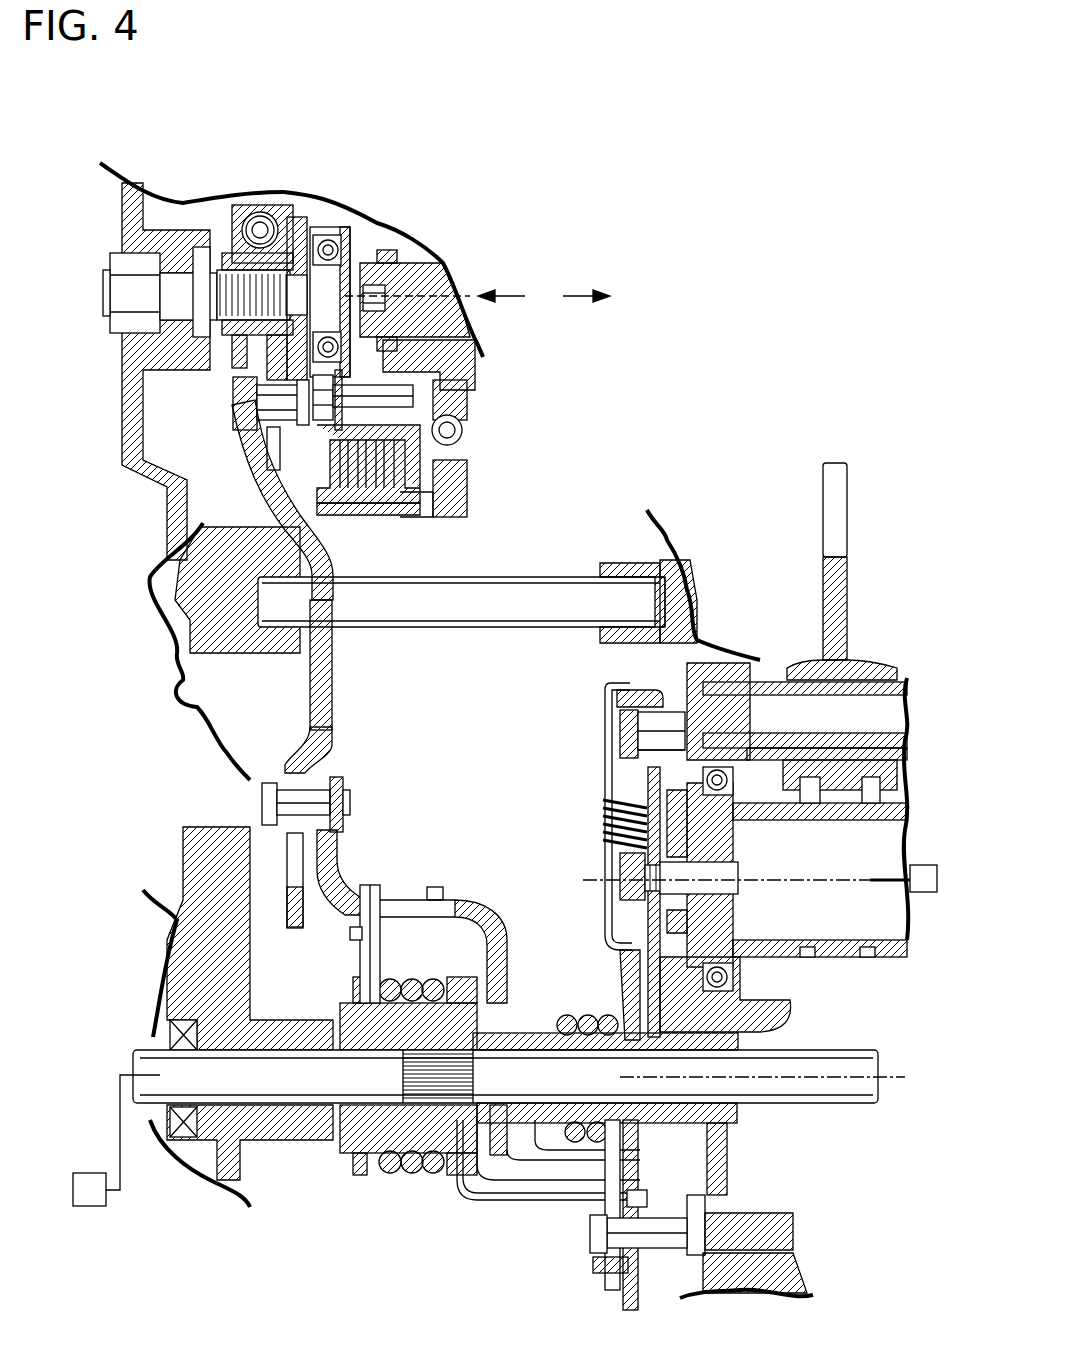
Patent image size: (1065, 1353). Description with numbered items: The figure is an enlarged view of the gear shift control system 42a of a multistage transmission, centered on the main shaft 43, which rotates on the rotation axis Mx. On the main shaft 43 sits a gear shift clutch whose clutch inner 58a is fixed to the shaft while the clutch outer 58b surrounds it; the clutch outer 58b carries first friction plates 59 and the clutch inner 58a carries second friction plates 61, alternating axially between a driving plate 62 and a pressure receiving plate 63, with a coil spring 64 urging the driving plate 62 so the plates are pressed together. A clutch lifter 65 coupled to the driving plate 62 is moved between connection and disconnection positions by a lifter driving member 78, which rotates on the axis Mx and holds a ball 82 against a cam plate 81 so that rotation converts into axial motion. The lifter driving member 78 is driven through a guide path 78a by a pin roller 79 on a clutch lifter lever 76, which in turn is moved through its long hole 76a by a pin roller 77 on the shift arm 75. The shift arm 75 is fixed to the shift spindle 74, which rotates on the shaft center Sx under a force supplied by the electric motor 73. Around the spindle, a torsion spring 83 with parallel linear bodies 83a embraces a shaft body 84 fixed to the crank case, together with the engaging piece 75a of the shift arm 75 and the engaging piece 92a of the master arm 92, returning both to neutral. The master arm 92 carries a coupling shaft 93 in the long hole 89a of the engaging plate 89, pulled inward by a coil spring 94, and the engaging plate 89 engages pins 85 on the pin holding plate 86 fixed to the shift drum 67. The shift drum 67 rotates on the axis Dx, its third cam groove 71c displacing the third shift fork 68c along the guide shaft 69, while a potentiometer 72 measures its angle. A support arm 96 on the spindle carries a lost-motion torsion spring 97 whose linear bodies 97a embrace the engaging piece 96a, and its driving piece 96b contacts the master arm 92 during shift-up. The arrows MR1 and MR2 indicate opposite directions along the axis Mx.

The cam plate 81 is at (235, 225).
The ball 82 is at (258, 220).
The lifter driving member 78 is at (278, 205).
The clutch lifter 65 is at (300, 220).
The clutch inner 58a is at (387, 250).
The main shaft 43 is at (415, 262).
The rotation axis of the main shaft Mx is at (437, 290).
The direction MR2 is at (504, 284).
The direction MR1 is at (589, 284).
The coil spring 64 is at (445, 360).
The second friction plates 61 is at (460, 405).
The driving plate 62 is at (467, 473).
The pin roller 79 is at (250, 440).
The guide path 78a is at (272, 445).
The pressure receiving plate 63 is at (322, 440).
The clutch outer 58b is at (385, 512).
The first friction plates 59 is at (410, 505).
The gear shift control system 42a is at (688, 496).
The clutch lifter lever 76 is at (333, 705).
The pin roller 77 is at (280, 785).
The long hole 76a is at (290, 890).
The support arm 96 is at (340, 1150).
The torsion spring 97 is at (388, 1173).
The linear body 97a is at (434, 887).
The engaging piece 96a is at (350, 935).
The shift arm 75 is at (503, 940).
The driving piece 96b is at (496, 1205).
The shift spindle 74 is at (795, 1100).
The shaft center of the shift spindle Sx is at (845, 1090).
The electric motor 73 is at (90, 1173).
The coil spring 94 is at (607, 730).
The coupling shaft 93 is at (637, 690).
The engaging plate 89 is at (651, 710).
The long hole 89a is at (690, 716).
The pins 85 is at (640, 790).
The master arm 92 is at (625, 962).
The pin holding plate 86 is at (630, 903).
The shift drum 67 is at (795, 953).
The third cam groove 71c is at (840, 815).
The guide shaft 69 is at (778, 683).
The third shift fork 68c is at (820, 605).
The rotation axis of the shift drum Dx is at (802, 888).
The potentiometer 72 is at (925, 865).
The torsion spring 83 is at (587, 1018).
The linear body 83a is at (615, 1285).
The engaging piece 75a is at (645, 1203).
The shaft body 84 is at (590, 1237).
The engaging piece 92a is at (593, 1267).